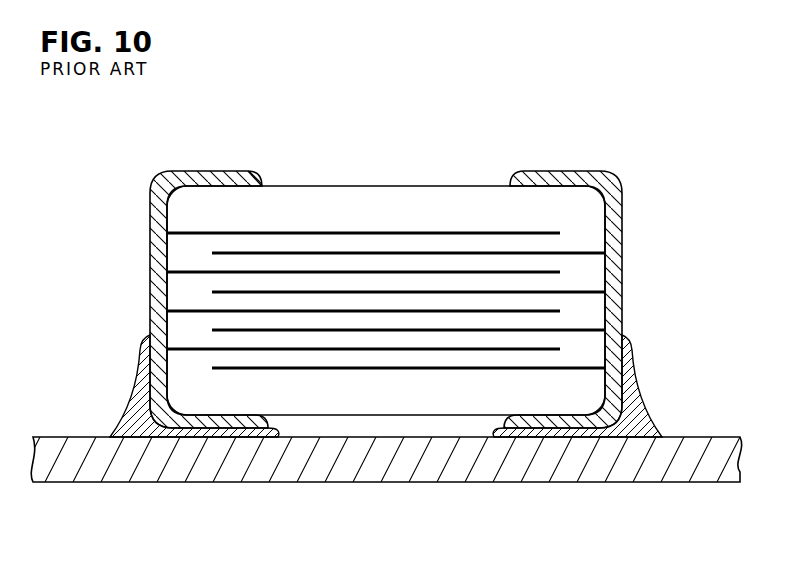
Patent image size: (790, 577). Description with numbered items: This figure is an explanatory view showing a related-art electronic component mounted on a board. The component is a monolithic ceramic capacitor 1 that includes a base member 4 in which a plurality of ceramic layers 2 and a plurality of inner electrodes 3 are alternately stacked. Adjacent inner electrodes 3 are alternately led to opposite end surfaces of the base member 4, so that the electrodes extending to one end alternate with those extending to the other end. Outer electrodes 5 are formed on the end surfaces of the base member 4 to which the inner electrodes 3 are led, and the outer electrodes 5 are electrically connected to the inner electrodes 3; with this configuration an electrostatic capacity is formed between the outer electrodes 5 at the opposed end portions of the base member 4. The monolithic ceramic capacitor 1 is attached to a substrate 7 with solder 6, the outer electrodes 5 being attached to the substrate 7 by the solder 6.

The monolithic ceramic capacitor 1 is at (217, 165).
The ceramic layers 2 is at (330, 280).
The inner electrodes 3 is at (447, 292).
The base member 4 is at (352, 185).
The outer electrodes 5 is at (168, 172).
The solder 6 is at (140, 412).
The substrate 7 is at (672, 473).